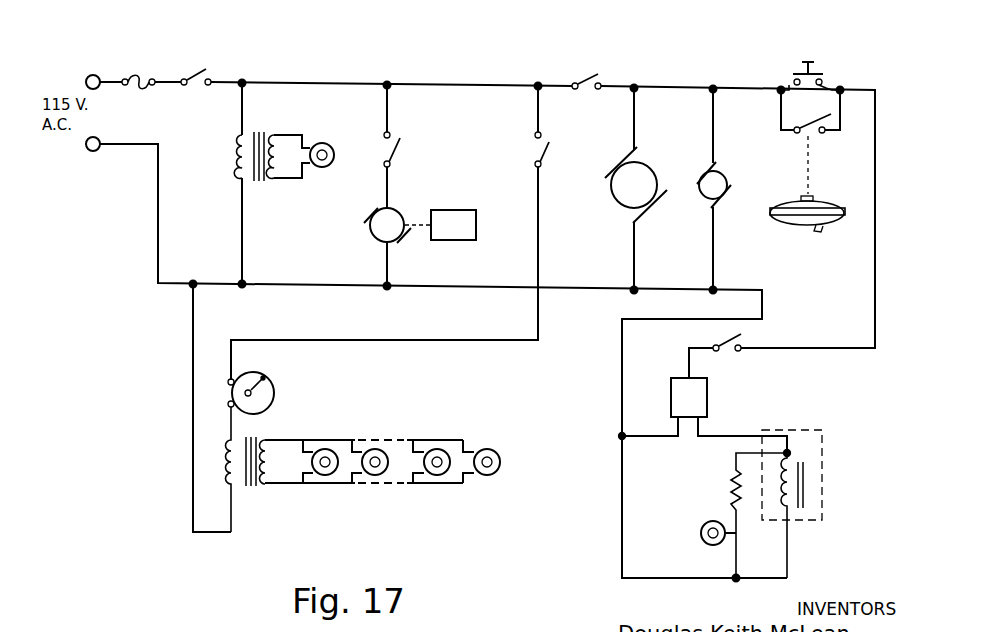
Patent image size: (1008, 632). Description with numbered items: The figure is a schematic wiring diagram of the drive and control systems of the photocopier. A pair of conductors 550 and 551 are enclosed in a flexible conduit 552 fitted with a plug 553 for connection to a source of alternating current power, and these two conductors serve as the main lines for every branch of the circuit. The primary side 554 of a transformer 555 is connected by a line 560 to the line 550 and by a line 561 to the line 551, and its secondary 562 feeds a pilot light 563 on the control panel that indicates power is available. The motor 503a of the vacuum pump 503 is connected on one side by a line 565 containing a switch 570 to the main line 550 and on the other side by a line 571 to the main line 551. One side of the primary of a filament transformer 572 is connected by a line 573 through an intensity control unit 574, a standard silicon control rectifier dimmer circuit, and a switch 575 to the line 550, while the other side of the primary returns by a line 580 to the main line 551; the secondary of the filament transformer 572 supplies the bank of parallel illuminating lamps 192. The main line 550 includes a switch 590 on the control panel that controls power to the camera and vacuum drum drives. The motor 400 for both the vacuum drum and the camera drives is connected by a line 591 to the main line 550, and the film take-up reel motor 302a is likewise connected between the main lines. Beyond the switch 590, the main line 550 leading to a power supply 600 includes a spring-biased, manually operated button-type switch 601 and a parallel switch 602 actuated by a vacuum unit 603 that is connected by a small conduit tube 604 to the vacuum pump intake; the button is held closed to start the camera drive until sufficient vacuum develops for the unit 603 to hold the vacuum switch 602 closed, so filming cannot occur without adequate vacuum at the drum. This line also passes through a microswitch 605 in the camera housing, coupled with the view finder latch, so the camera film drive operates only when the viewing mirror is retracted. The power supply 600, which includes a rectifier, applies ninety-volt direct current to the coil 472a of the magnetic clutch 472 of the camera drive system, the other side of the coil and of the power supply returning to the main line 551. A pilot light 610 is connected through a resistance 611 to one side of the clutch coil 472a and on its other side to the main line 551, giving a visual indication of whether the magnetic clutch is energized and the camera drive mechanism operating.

The conductor 550 is at (103, 78).
The conductor 551 is at (121, 150).
The flexible conduit 552 is at (139, 77).
The plug 553 is at (213, 60).
The primary side 554 is at (240, 172).
The transformer 555 is at (265, 193).
The line 560 is at (243, 108).
The line 561 is at (243, 251).
The secondary 562 is at (284, 178).
The pilot light 563 is at (330, 144).
The switch 570 is at (398, 142).
The line 565 is at (378, 187).
The motor 503a is at (385, 238).
The vacuum pump 503 is at (476, 210).
The line 571 is at (387, 276).
The switch 575 is at (548, 146).
The line 573 is at (532, 232).
The switch 590 is at (596, 75).
The line 591 is at (638, 116).
The motor 400 is at (645, 163).
The film take-up reel motor 302a is at (728, 177).
The manual button-type switch 601 is at (793, 56).
The vacuum switch 602 is at (832, 123).
The vacuum unit 603 is at (782, 226).
The small conduit tube 604 is at (822, 229).
The microswitch 605 is at (744, 337).
The power supply 600 is at (710, 404).
The magnetic clutch 472 is at (806, 432).
The coil 472a is at (777, 500).
The resistance 611 is at (733, 478).
The pilot light 610 is at (722, 525).
The intensity control unit 574 is at (274, 393).
The filament transformer 572 is at (254, 497).
The line 580 is at (196, 414).
The illuminating lamps 192 is at (333, 450).